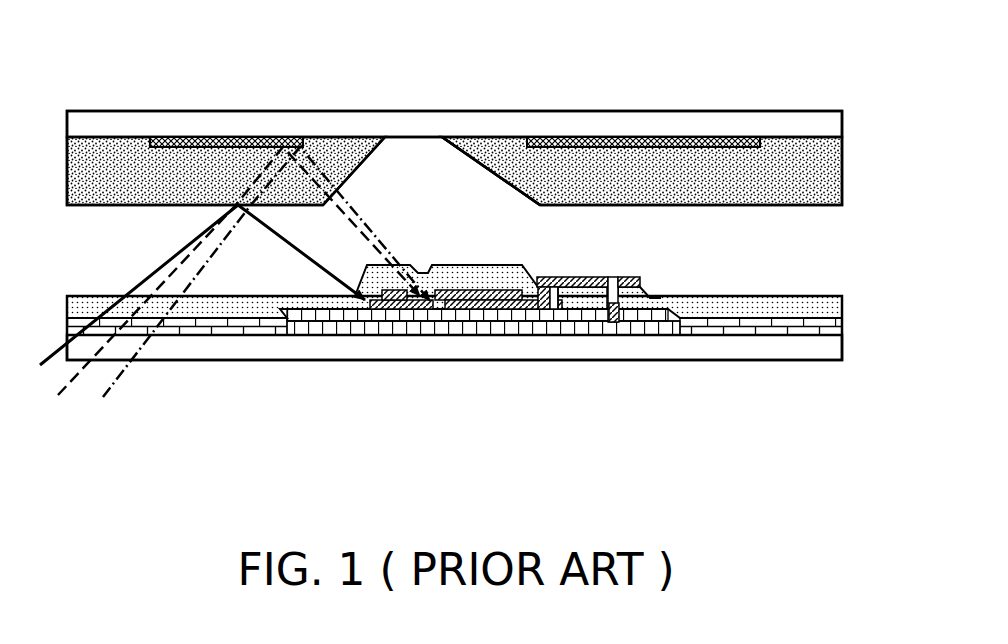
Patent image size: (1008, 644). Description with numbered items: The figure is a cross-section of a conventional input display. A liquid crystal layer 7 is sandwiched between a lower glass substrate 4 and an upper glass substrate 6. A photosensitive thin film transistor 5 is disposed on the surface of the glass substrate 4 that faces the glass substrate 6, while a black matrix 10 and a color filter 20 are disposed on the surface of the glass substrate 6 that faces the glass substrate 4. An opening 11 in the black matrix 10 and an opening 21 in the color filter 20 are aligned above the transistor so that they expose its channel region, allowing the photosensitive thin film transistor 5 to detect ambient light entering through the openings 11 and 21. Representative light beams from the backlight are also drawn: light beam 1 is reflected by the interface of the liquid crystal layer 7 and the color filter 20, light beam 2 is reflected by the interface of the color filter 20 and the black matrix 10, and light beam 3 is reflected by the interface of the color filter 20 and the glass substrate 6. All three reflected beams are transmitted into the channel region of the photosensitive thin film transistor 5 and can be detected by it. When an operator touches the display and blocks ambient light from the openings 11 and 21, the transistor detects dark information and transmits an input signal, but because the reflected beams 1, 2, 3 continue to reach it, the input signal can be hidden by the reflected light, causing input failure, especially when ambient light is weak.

The light beam 1 is at (50, 352).
The light beam 2 is at (84, 386).
The light beam 3 is at (128, 387).
The glass substrate 4 is at (742, 358).
The photosensitive thin film transistor 5 is at (427, 243).
The glass substrate 6 is at (619, 118).
The liquid crystal layer 7 is at (817, 251).
The black matrix 10 is at (212, 137).
The opening 11 is at (536, 138).
The color filter 20 is at (100, 152).
The opening 21 is at (496, 165).